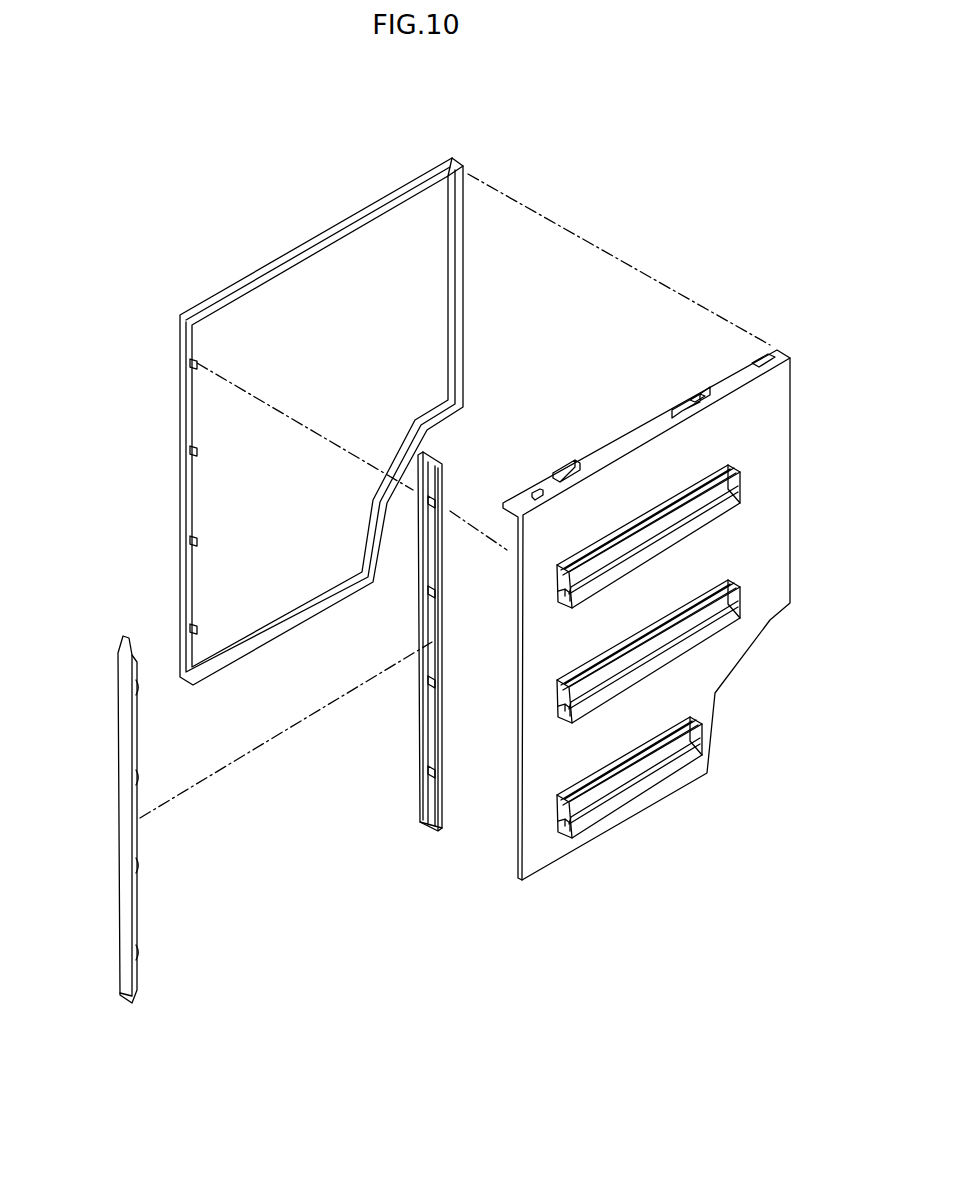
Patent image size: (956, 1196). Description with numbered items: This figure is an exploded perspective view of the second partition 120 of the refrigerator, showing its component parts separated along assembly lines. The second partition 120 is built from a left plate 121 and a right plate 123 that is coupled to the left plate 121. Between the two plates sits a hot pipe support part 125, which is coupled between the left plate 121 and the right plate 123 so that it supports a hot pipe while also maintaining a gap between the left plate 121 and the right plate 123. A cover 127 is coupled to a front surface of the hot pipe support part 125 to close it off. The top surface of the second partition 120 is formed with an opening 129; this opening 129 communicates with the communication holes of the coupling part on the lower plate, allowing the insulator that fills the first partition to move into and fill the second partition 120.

The second partition 120 is at (582, 89).
The left plate 121 is at (262, 297).
The right plate 123 is at (758, 593).
The hot pipe support part 125 is at (420, 613).
The cover 127 is at (122, 813).
The opening 129 is at (740, 375).